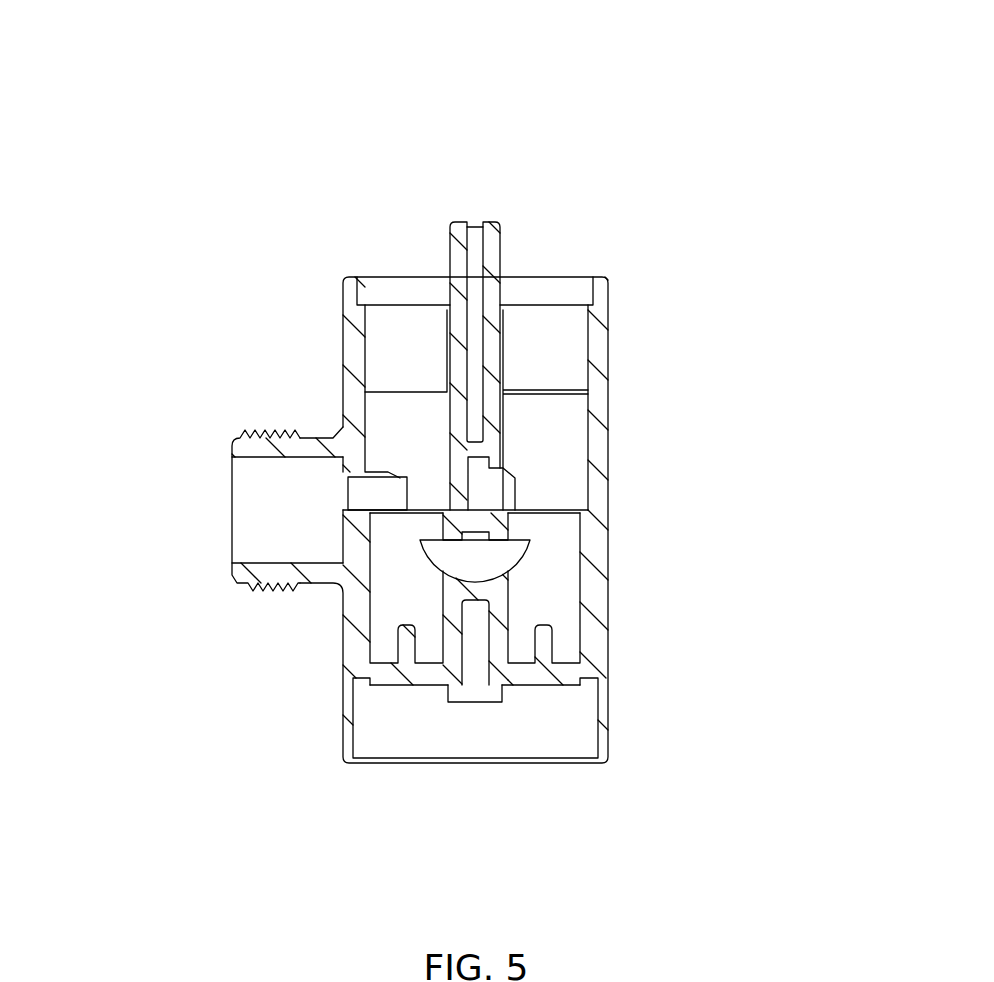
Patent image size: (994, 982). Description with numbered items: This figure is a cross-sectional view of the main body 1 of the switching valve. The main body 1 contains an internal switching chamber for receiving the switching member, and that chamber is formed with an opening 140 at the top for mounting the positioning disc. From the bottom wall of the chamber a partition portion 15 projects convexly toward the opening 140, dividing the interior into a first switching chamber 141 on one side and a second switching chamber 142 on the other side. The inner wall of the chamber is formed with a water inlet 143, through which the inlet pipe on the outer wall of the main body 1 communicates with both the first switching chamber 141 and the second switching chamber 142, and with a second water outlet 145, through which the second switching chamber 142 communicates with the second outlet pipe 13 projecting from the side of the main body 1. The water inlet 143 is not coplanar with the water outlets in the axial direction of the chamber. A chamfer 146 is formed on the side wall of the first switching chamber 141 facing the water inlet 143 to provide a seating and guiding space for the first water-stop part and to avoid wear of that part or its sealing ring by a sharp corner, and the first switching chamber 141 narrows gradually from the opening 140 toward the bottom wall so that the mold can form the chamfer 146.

The main body 1 is at (595, 576).
The second outlet pipe 13 is at (244, 582).
The partition portion 15 is at (475, 220).
The opening 140 is at (535, 285).
The first switching chamber 141 is at (543, 442).
The second switching chamber 142 is at (415, 430).
The water inlet 143 is at (477, 557).
The second water outlet 145 is at (358, 495).
The chamfer 146 is at (335, 507).